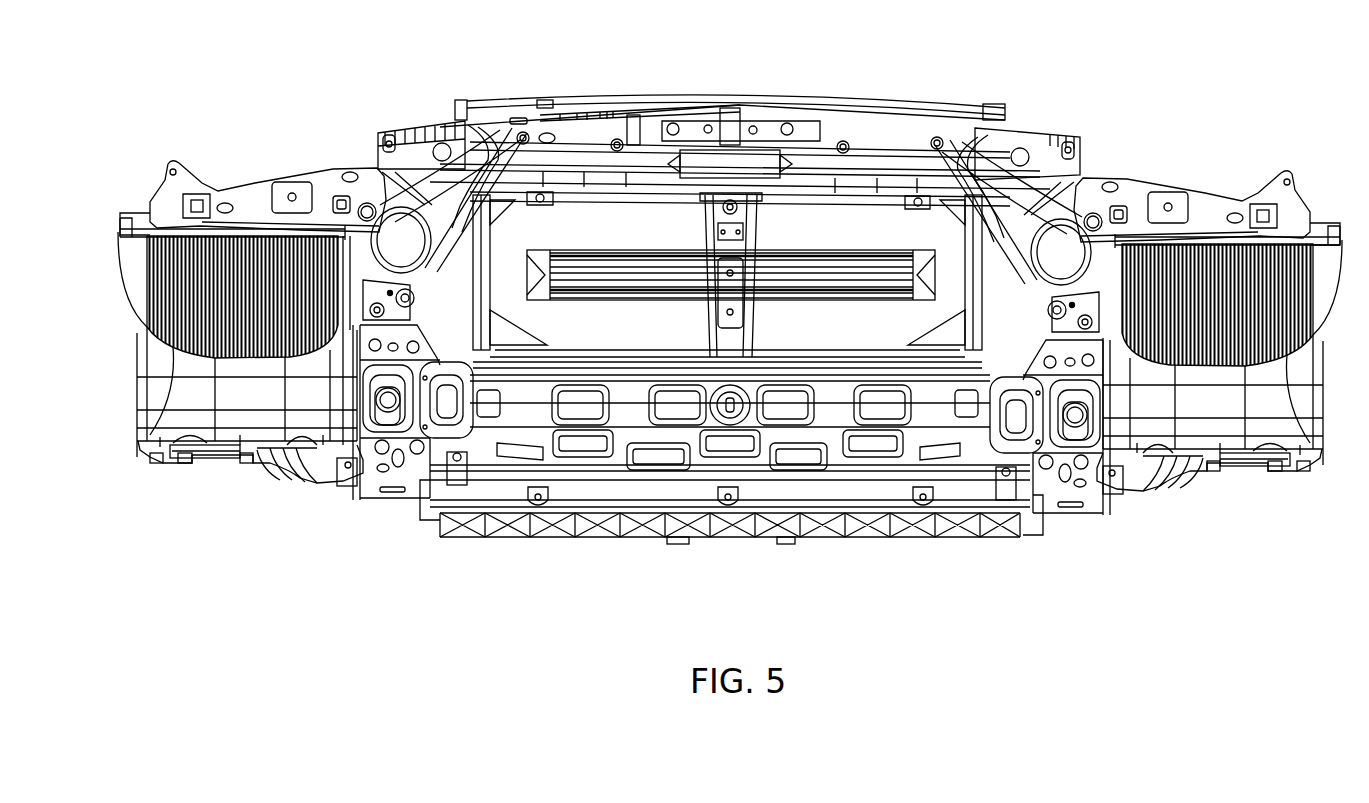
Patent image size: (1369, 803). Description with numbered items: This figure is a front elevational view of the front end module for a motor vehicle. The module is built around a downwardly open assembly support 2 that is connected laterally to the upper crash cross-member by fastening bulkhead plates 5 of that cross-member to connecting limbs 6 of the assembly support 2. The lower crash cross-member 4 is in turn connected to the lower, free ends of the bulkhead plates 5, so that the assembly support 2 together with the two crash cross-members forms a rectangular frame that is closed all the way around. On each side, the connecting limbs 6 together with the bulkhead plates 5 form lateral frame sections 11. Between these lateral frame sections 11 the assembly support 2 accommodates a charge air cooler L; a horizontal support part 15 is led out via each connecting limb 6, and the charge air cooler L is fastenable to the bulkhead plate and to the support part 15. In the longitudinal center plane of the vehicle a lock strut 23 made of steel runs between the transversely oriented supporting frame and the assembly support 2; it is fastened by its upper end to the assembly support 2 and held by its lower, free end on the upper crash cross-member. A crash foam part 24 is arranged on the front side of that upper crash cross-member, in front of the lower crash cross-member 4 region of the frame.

The assembly support 2 is at (788, 118).
The horizontal support part 15 is at (250, 197).
The connecting limb 6 is at (372, 204).
The charge air cooler L is at (152, 390).
The lateral frame section 11 is at (353, 357).
The bulkhead plate 5 is at (376, 457).
The crash foam part 24 is at (537, 412).
The lock strut 23 is at (737, 343).
The lower crash cross-member 4 is at (870, 517).